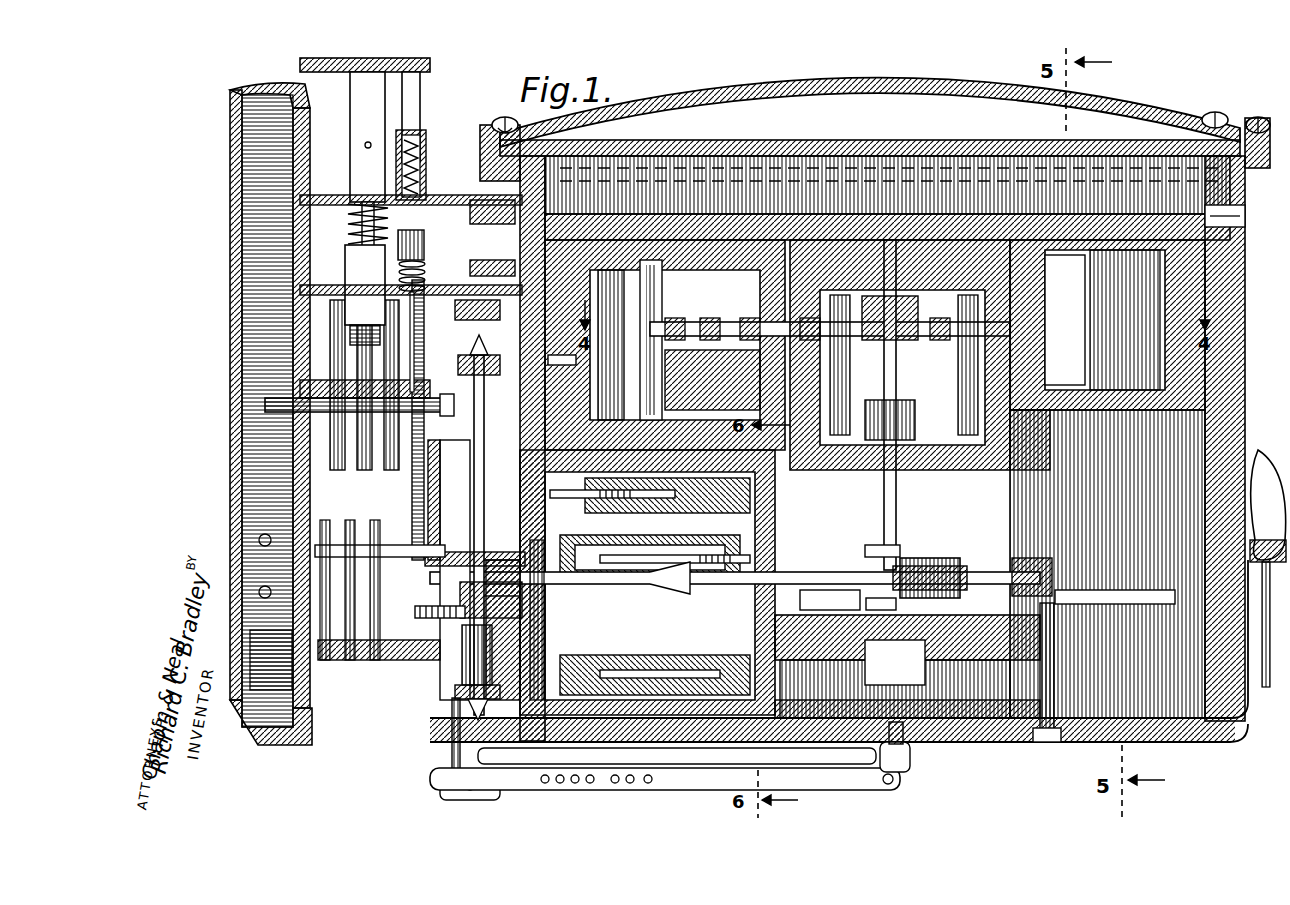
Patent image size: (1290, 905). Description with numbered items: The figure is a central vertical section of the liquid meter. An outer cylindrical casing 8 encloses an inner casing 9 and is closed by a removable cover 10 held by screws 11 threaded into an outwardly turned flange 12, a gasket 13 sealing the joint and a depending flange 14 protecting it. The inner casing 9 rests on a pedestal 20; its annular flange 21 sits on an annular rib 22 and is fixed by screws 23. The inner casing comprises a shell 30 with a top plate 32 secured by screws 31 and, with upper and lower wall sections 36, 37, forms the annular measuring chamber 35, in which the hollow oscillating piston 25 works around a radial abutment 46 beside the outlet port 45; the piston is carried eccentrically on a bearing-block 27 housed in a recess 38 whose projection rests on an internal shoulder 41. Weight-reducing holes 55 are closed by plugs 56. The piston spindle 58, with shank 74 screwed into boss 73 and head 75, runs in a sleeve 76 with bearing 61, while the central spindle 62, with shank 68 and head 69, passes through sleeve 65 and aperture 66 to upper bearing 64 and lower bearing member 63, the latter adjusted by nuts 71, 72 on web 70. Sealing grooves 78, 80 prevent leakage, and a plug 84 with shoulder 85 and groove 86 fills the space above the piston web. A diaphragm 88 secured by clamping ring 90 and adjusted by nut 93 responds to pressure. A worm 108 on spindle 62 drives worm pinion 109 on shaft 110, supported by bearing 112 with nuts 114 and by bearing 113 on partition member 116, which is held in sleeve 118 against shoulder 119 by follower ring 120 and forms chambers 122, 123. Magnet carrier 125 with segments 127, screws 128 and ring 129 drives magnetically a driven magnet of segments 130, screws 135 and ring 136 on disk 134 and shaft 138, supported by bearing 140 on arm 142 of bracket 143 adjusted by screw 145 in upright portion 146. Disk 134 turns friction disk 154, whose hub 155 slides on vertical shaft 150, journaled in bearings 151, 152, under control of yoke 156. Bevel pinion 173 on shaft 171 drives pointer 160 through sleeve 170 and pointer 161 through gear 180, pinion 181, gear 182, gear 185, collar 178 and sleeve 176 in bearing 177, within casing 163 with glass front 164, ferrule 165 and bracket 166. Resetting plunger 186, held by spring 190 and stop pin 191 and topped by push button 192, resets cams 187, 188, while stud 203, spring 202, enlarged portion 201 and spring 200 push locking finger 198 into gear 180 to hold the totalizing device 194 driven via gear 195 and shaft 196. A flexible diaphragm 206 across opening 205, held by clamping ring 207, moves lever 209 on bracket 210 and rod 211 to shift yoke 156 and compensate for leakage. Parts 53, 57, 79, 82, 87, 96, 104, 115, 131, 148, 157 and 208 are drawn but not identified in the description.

The outer cylindrical casing 8 is at (1170, 722).
The inner cylindrical casing 9 is at (1200, 372).
The removable cover 10 is at (705, 100).
The screws 11 is at (505, 125).
The outwardly turned flange 12 is at (492, 178).
The gasket 13 is at (500, 133).
The depending flange 14 is at (498, 198).
The pedestal 20 is at (1070, 640).
The annular flange 21 is at (1232, 216).
The annular rib 22 is at (1240, 245).
The screws 23 is at (515, 265).
The oscillating cylindrical piston 25 is at (522, 300).
The bearing-block or crank-disk 27 is at (1100, 370).
The cylindrical shell 30 is at (1240, 340).
The screws 31 is at (540, 400).
The top plate 32 is at (790, 240).
The annular measuring chamber 35 is at (548, 360).
The upper annular wall section 36 is at (840, 300).
The lower annular wall section 37 is at (585, 235).
The recess 38 is at (1050, 340).
The internal shoulder 41 is at (1050, 498).
The outlet port 45 is at (1100, 250).
The radial abutment 46 is at (1115, 280).
The valve 53 is at (680, 330).
The holes 55 is at (665, 275).
The plugs 56 is at (650, 345).
The spring 57 is at (710, 335).
The spindle 58 is at (750, 340).
The bearing 61 is at (655, 320).
The central spindle 62 is at (905, 580).
The lower bearing member 63 is at (980, 585).
The upper bearing 64 is at (1000, 325).
The sleeve 65 is at (1080, 480).
The central aperture 66 is at (940, 570).
The enlarged shank portion 68 is at (920, 300).
The head 69 is at (890, 290).
The transverse web 70 is at (880, 670).
The nut 71 is at (940, 600).
The nut 72 is at (930, 665).
The recessed central boss 73 is at (930, 260).
The screw-threaded shank portion 74 is at (880, 330).
The head 75 is at (860, 320).
The vertical sleeve 76 is at (680, 300).
The shallow grooves 78 is at (680, 250).
The seat 79 is at (1070, 390).
The sealing grooves 80 is at (720, 320).
The wall 82 is at (980, 250).
The plug 84 is at (830, 260).
The annular shoulder 85 is at (1050, 235).
The annular groove 86 is at (900, 300).
The fitting 87 is at (1283, 470).
The diaphragm 88 is at (1270, 568).
The clamping ring 90 is at (1255, 420).
The nut 93 is at (1262, 620).
The nut 96 is at (1283, 512).
The valve 104 is at (1150, 360).
The worm 108 is at (900, 575).
The worm pinion 109 is at (870, 605).
The horizontal shaft 110 is at (820, 580).
The pivot bearing 112 is at (430, 470).
The fixed pivot bearing 113 is at (462, 365).
The nuts 114 is at (540, 380).
The shaft 115 is at (690, 572).
The partition member 116 is at (540, 702).
The horizontally disposed sleeve 118 is at (486, 430).
The internal shoulder 119 is at (780, 690).
The follower ring 120 is at (486, 450).
The outer annular chamber 122 is at (680, 670).
The inner annular chamber 123 is at (560, 520).
The magnet carrier 125 is at (770, 555).
The cylindrical segments 127 is at (665, 782).
The screws 128 is at (745, 586).
The ring 129 is at (690, 590).
The cylindrical segments 130 is at (660, 495).
The block 131 is at (665, 545).
The supporting disk 134 is at (440, 625).
The screws 135 is at (560, 495).
The hardened steel ring 136 is at (585, 762).
The horizontal shaft 138 is at (520, 548).
The pivot bearing 140 is at (470, 590).
The vertical arm 142 is at (478, 660).
The bracket 143 is at (455, 715).
The adjusting screw 145 is at (430, 612).
The upright portion 146 is at (430, 640).
The wall 148 is at (515, 742).
The vertical shaft 150 is at (445, 490).
The pivot bearing 151 is at (470, 690).
The pivot bearing 152 is at (466, 310).
The friction disk 154 is at (440, 560).
The hub 155 is at (450, 640).
The yoke 156 is at (470, 700).
The pivot 157 is at (462, 780).
The pointer 160 is at (260, 330).
The pointer 161 is at (300, 340).
The casing 163 is at (302, 738).
The glass front 164 is at (300, 425).
The annular ferrule 165 is at (300, 85).
The bracket 166 is at (290, 200).
The sleeve 170 is at (265, 415).
The horizontal shaft 171 is at (265, 405).
The bevel pinion 173 is at (468, 365).
The sleeve 176 is at (345, 440).
The bearing 177 is at (310, 385).
The collar 178 is at (365, 440).
The gear 180 is at (378, 328).
The pinion 181 is at (410, 365).
The gear 182 is at (408, 355).
The gear 185 is at (345, 300).
The resetting plunger 186 is at (355, 270).
The cam 187 is at (330, 500).
The cam 188 is at (290, 535).
The spring 190 is at (360, 215).
The stop pin 191 is at (367, 142).
The push button 192 is at (298, 100).
The totalizing device 194 is at (250, 555).
The gear 195 is at (425, 535).
The shaft 196 is at (415, 520).
The locking finger 198 is at (425, 276).
The spring 200 is at (425, 245).
The enlarged upper portion 201 is at (426, 170).
The coiled spring 202 is at (418, 130).
The stud 203 is at (412, 84).
The opening 205 is at (1000, 735).
The flexible diaphragm 206 is at (960, 745).
The clamping ring 207 is at (1050, 738).
The pivot 208 is at (905, 765).
The lever 209 is at (810, 782).
The bracket 210 is at (750, 765).
The rod 211 is at (460, 795).